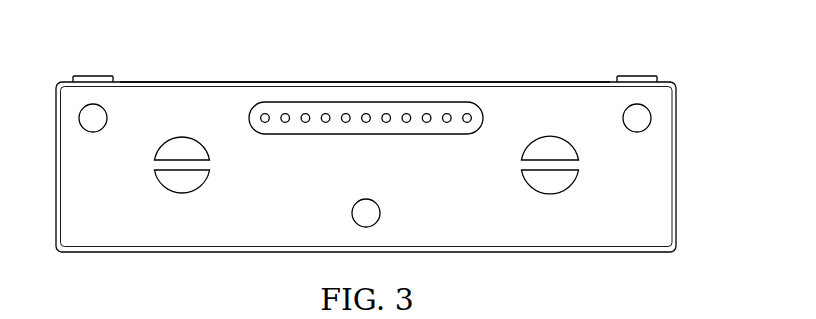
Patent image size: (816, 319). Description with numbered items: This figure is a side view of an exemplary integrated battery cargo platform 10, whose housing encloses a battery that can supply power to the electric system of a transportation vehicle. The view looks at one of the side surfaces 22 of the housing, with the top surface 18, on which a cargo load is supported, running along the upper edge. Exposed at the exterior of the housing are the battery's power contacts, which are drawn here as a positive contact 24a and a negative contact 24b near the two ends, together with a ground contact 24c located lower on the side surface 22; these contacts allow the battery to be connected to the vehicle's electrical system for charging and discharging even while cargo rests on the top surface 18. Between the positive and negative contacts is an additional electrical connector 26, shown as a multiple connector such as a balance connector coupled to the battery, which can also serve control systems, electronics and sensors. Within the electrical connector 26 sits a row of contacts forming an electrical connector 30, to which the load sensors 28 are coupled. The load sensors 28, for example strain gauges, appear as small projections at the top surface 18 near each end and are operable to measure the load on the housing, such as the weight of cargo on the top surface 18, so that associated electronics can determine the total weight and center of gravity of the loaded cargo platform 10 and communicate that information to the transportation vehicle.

The cargo platform 10 is at (164, 54).
The top surface 18 is at (267, 82).
The side surfaces 22 is at (658, 213).
The positive contact 24a is at (93, 133).
The negative contact 24b is at (635, 133).
The ground contact 24c is at (380, 213).
The electrical connector 26 is at (300, 135).
The load sensor 28 is at (93, 75).
The electrical connector 30 is at (468, 122).